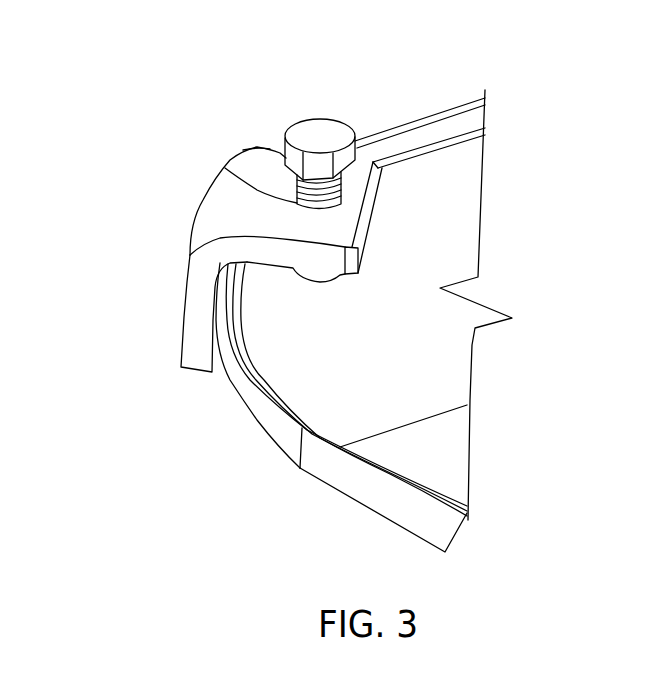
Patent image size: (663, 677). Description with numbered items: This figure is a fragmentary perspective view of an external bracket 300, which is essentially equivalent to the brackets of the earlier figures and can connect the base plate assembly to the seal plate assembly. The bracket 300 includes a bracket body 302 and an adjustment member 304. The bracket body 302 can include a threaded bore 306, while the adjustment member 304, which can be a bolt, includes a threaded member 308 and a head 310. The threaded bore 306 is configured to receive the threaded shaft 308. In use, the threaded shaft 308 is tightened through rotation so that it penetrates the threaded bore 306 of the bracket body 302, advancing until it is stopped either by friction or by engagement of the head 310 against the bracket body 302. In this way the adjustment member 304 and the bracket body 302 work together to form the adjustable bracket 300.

The bracket 300 is at (165, 90).
The bracket body 302 is at (195, 220).
The adjustment member 304 is at (323, 128).
The threaded bore 306 is at (347, 207).
The threaded member 308 is at (225, 168).
The head 310 is at (268, 148).